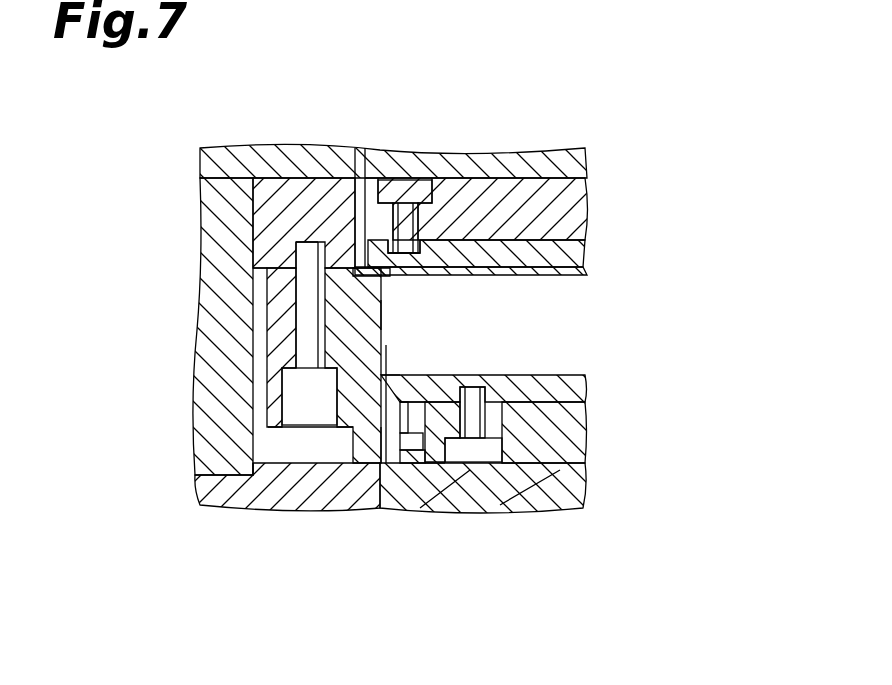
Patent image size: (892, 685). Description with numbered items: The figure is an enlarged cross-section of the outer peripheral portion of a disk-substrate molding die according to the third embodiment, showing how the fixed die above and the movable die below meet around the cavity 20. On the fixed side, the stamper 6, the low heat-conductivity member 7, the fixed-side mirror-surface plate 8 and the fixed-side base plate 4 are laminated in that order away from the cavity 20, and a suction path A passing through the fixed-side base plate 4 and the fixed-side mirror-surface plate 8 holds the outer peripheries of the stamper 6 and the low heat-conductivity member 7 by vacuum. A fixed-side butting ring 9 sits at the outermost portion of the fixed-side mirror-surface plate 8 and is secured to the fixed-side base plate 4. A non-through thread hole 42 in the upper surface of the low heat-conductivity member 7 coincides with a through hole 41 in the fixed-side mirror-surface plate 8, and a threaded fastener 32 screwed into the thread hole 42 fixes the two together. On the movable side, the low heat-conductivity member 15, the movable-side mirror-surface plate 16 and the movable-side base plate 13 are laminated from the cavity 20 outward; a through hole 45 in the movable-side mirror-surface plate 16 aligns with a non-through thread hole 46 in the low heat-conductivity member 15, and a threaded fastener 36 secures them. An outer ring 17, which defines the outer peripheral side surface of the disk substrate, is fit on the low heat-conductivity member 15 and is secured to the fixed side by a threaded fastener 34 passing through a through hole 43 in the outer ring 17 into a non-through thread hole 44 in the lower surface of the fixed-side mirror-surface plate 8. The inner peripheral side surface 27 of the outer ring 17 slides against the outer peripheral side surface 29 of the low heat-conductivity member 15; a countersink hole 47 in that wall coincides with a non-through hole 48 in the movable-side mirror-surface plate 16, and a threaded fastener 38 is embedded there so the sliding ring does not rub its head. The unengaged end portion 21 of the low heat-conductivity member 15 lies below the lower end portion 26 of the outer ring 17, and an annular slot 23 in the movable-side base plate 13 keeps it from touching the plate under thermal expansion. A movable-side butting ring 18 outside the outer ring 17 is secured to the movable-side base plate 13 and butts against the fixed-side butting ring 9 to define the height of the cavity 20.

The fixed-side base plate 4 is at (543, 167).
The fixed-side mirror-surface plate 8 is at (543, 217).
The low heat-conductivity member 7 is at (557, 253).
The stamper 6 is at (547, 273).
The fixed-side butting ring 9 is at (223, 227).
The movable-side butting ring 18 is at (215, 398).
The movable-side base plate 13 is at (587, 492).
The low heat-conductivity member 15 is at (547, 390).
The movable-side mirror-surface plate 16 is at (590, 420).
The cavity 20 is at (493, 340).
The unengaged end portion 21 is at (383, 348).
The annular slot 23 is at (400, 465).
The lower end portion 26 is at (380, 435).
The inner peripheral side surface 27 is at (330, 420).
The outer peripheral side surface 29 is at (387, 437).
The threaded fastener 32 is at (405, 195).
The threaded fastener 34 is at (300, 382).
The threaded fastener 36 is at (480, 447).
The threaded fastener 38 is at (404, 430).
The through hole 41 is at (452, 240).
The non-through thread hole 42 is at (420, 247).
The through hole 43 is at (270, 322).
The non-through thread hole 44 is at (290, 245).
The through hole 45 is at (590, 455).
The non-through thread hole 46 is at (502, 375).
The countersink hole 47 is at (393, 455).
The non-through hole 48 is at (455, 463).
The outer ring 17 is at (303, 430).
The suction path A is at (359, 148).